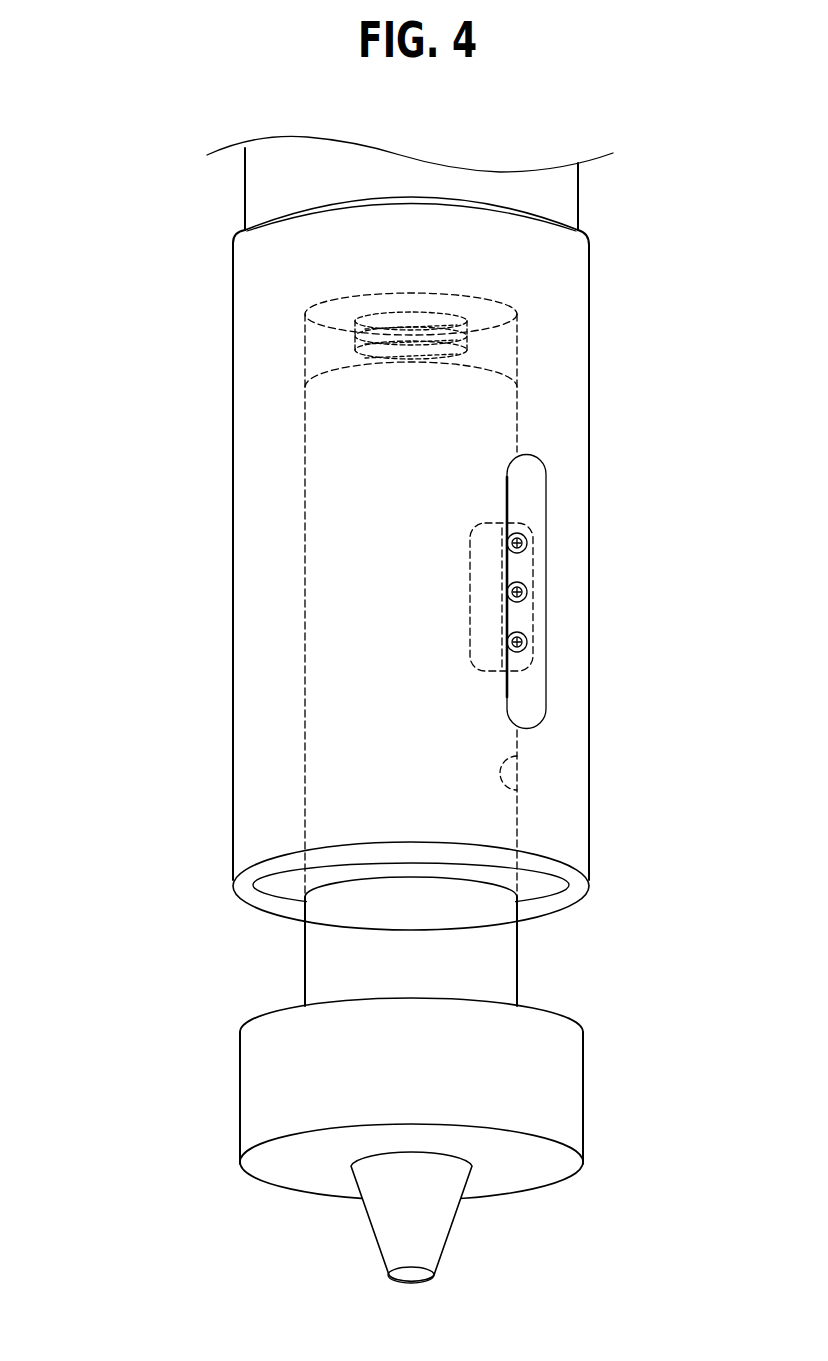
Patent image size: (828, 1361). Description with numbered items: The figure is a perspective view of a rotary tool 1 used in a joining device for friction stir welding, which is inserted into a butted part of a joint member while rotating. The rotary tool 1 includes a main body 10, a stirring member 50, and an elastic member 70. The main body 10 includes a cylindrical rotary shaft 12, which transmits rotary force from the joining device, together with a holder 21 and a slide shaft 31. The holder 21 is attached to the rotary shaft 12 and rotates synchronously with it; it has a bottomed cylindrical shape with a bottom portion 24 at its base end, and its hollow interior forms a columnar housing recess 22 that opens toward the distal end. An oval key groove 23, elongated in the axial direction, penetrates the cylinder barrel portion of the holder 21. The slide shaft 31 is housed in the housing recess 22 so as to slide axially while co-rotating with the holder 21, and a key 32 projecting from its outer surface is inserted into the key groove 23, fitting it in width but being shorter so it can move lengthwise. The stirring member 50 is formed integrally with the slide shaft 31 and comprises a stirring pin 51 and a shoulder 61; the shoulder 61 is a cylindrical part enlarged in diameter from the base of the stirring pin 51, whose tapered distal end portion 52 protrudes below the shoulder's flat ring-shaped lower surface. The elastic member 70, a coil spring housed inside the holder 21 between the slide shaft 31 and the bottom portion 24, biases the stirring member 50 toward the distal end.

The rotary tool 1 is at (163, 215).
The main body 10 is at (416, 580).
The rotary shaft 12 is at (570, 198).
The holder 21 is at (268, 532).
The housing recess 22 is at (517, 790).
The key groove 23 is at (533, 455).
The bottom portion 24 is at (453, 248).
The slide shaft 31 is at (342, 975).
The key 32 is at (523, 613).
The stirring member 50 is at (327, 1152).
The stirring pin 51 is at (376, 1212).
The distal end portion 52 is at (390, 1255).
The shoulder 61 is at (269, 1093).
The elastic member 70 is at (467, 337).